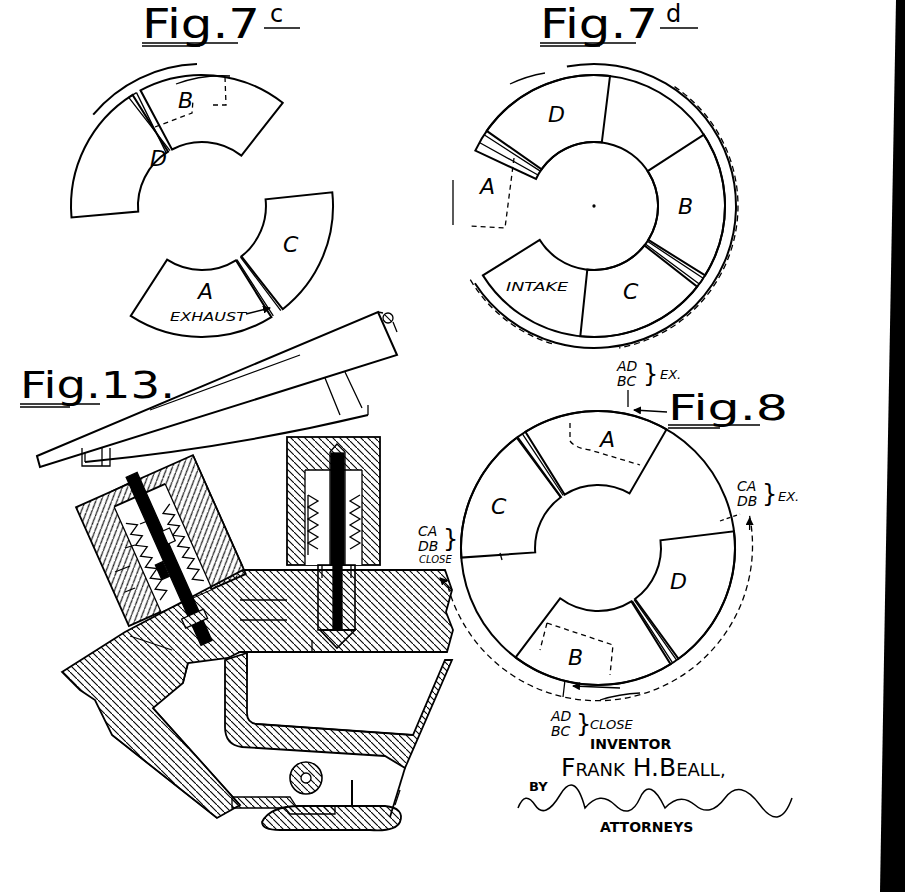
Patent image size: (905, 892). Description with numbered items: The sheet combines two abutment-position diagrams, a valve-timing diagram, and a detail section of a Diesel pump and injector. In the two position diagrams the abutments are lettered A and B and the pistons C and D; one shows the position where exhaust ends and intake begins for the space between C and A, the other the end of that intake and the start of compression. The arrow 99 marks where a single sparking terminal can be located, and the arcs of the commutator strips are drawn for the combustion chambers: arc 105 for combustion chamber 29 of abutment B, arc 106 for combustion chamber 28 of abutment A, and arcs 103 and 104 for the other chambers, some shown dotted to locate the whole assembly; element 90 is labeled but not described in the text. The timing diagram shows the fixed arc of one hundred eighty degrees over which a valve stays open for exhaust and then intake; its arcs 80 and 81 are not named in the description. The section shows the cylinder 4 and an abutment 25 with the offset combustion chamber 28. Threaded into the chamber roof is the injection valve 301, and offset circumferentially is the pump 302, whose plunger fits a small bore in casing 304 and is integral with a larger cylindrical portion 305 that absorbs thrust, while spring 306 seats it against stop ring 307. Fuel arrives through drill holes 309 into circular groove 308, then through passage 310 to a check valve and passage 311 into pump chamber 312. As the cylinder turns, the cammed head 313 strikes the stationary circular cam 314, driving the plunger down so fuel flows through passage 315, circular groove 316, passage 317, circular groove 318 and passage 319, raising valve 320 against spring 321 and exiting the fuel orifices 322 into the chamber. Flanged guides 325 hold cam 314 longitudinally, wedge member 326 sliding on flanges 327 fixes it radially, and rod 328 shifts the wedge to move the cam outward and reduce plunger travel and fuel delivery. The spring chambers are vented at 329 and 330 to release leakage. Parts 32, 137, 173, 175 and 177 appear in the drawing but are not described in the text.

In FIG. 7C, the arrow 99 is at (106, 99).
In FIG. 7D, the arrow 99 is at (498, 103).
In FIG. 7C, the commutator strip arc 105 is at (150, 63).
In FIG. 7D, the commutator strip arc 105 is at (716, 131).
In FIG. 7C, the rotary valve member 90 is at (203, 76).
In FIG. 7D, the rotary valve member 90 is at (460, 205).
In FIG. 7C, the combustion chamber 29 is at (206, 108).
In FIG. 7D, the commutator strip arc 106 is at (527, 78).
In FIG. 7D, the commutator strip arc 103 is at (458, 253).
In FIG. 7D, the commutator strip arc 104 is at (714, 289).
In FIG. 7D, the combustion chamber 28 is at (498, 212).
In FIG. 13, the combustion chamber 28 is at (418, 705).
In FIG. 8, the valve timing arc 80 is at (737, 573).
In FIG. 8, the closing point 81 is at (623, 696).
In FIG. 13, the cylinder 4 is at (82, 670).
In FIG. 13, the abutment 25 is at (408, 752).
In FIG. 13, the cam 32 is at (388, 818).
In FIG. 13, the bearing wall 137 is at (397, 800).
In FIG. 13, the roller 173 is at (294, 768).
In FIG. 13, the follower arm 175 is at (286, 797).
In FIG. 13, the pin 177 is at (353, 785).
In FIG. 13, the injection valve 301 is at (292, 540).
In FIG. 13, the pump 302 is at (115, 572).
In FIG. 13, the casing 304 is at (125, 592).
In FIG. 13, the cylindrical portion 305 is at (140, 524).
In FIG. 13, the spring 306 is at (125, 548).
In FIG. 13, the stop ring 307 is at (108, 494).
In FIG. 13, the circular groove 308 is at (263, 590).
In FIG. 13, the drill holes 309 is at (295, 566).
In FIG. 13, the passage 310 is at (172, 651).
In FIG. 13, the passage 311 is at (196, 752).
In FIG. 13, the pump chamber 312 is at (192, 672).
In FIG. 13, the cammed head 313 is at (118, 479).
In FIG. 13, the stationary circular cam 314 is at (364, 403).
In FIG. 13, the passage 315 is at (254, 668).
In FIG. 13, the circular groove 316 is at (161, 746).
In FIG. 13, the passage 317 is at (271, 654).
In FIG. 13, the circular groove 318 is at (263, 612).
In FIG. 13, the passage 319 is at (312, 654).
In FIG. 13, the valve 320 is at (358, 574).
In FIG. 13, the spring 321 is at (306, 514).
In FIG. 13, the fuel orifices 322 is at (348, 654).
In FIG. 13, the flanged guides 325 is at (324, 406).
In FIG. 13, the wedge member 326 is at (386, 358).
In FIG. 13, the flanges 327 is at (195, 393).
In FIG. 13, the rod 328 is at (398, 327).
In FIG. 13, the vent 329 is at (197, 472).
In FIG. 13, the vent 330 is at (378, 497).